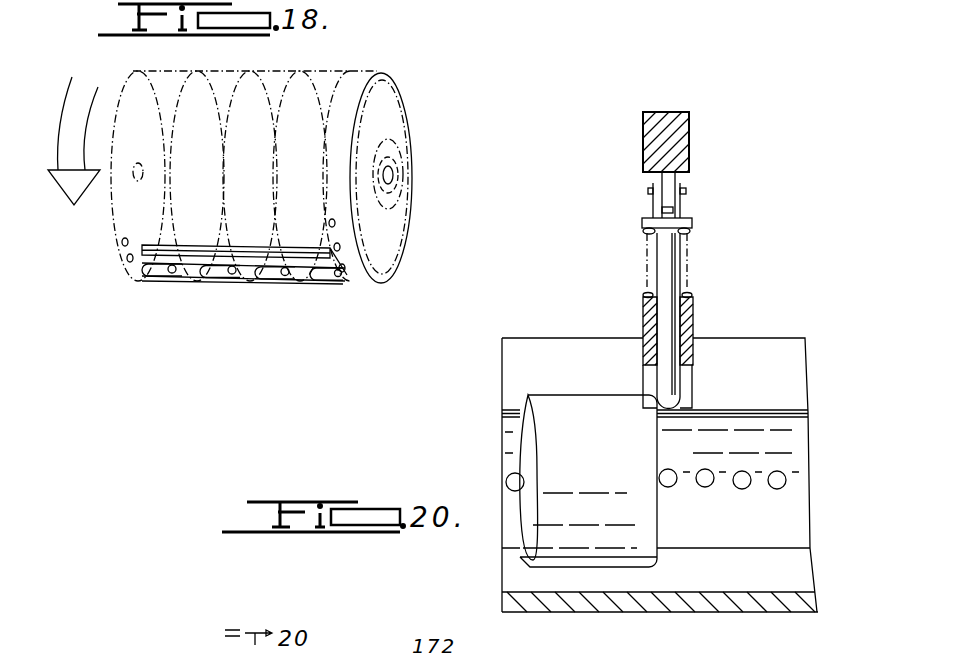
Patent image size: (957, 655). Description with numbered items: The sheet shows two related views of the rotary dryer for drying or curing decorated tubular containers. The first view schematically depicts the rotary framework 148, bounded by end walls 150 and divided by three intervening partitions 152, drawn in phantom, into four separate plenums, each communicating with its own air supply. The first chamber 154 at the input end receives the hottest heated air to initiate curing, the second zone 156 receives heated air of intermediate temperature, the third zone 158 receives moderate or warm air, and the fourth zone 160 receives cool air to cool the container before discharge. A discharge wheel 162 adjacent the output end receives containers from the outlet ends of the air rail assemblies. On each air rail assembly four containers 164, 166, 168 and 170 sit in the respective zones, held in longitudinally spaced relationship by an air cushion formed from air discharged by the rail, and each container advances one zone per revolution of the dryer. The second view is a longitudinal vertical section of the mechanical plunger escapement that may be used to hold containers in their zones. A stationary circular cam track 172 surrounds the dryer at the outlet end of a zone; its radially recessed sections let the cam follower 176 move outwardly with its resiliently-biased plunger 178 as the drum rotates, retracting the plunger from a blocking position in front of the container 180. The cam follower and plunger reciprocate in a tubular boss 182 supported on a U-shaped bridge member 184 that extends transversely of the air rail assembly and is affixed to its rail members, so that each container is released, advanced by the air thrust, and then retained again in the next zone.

In FIG. 18, the rotary framework 148 is at (115, 262).
In FIG. 18, the end walls 150 is at (107, 208).
In FIG. 18, the intervening partitions 152 is at (278, 100).
In FIG. 18, the first chamber 154 is at (165, 282).
In FIG. 18, the second zone 156 is at (218, 287).
In FIG. 18, the third zone 158 is at (275, 287).
In FIG. 18, the fourth zone 160 is at (322, 288).
In FIG. 18, the discharge wheel 162 is at (410, 229).
In FIG. 18, the container 164 is at (150, 272).
In FIG. 18, the container 166 is at (213, 270).
In FIG. 18, the container 168 is at (267, 270).
In FIG. 18, the container 170 is at (317, 270).
In FIG. 20, the circular cam track 172 is at (692, 138).
In FIG. 20, the cam follower 176 is at (667, 202).
In FIG. 20, the resiliently-biased plunger 178 is at (672, 263).
In FIG. 20, the container 180 is at (603, 557).
In FIG. 20, the tubular boss 182 is at (688, 315).
In FIG. 20, the U-shaped bridge member 184 is at (685, 357).